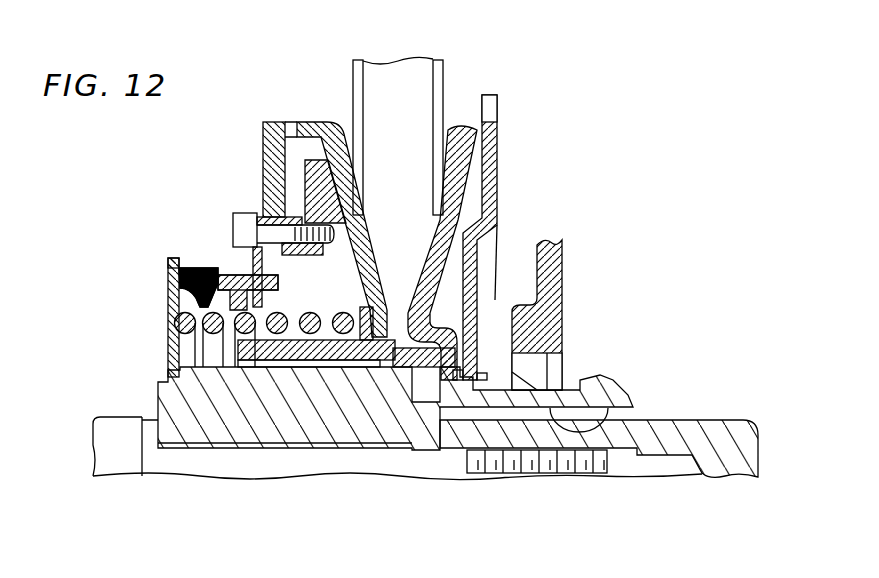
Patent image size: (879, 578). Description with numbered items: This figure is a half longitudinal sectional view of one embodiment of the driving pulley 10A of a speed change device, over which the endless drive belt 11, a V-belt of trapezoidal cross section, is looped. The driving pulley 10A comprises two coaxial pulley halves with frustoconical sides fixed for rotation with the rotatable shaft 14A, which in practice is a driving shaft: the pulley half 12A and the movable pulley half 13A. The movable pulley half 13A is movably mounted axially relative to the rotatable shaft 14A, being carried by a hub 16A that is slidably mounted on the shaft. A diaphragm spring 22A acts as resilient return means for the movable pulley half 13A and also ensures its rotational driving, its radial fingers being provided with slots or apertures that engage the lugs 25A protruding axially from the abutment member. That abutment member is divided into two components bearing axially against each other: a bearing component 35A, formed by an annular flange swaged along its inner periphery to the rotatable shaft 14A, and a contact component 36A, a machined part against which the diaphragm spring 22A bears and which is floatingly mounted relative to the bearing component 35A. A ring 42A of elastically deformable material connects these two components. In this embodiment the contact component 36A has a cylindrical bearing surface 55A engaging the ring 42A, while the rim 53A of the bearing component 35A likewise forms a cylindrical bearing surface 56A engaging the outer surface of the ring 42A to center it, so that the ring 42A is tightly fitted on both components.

The driving pulley 10A is at (337, 102).
The endless drive belt 11 is at (407, 238).
The pulley half 12A is at (443, 157).
The movable pulley half 13A is at (363, 203).
The rotatable shaft 14A is at (155, 392).
The hub 16A is at (297, 338).
The diaphragm spring 22A is at (262, 158).
The lugs 25A is at (280, 277).
The bearing component 35A is at (168, 339).
The contact component 36A is at (226, 230).
The ring 42A is at (207, 263).
The rim 53A is at (172, 258).
The cylindrical bearing surface 55A is at (237, 270).
The cylindrical bearing surface 56A is at (193, 268).